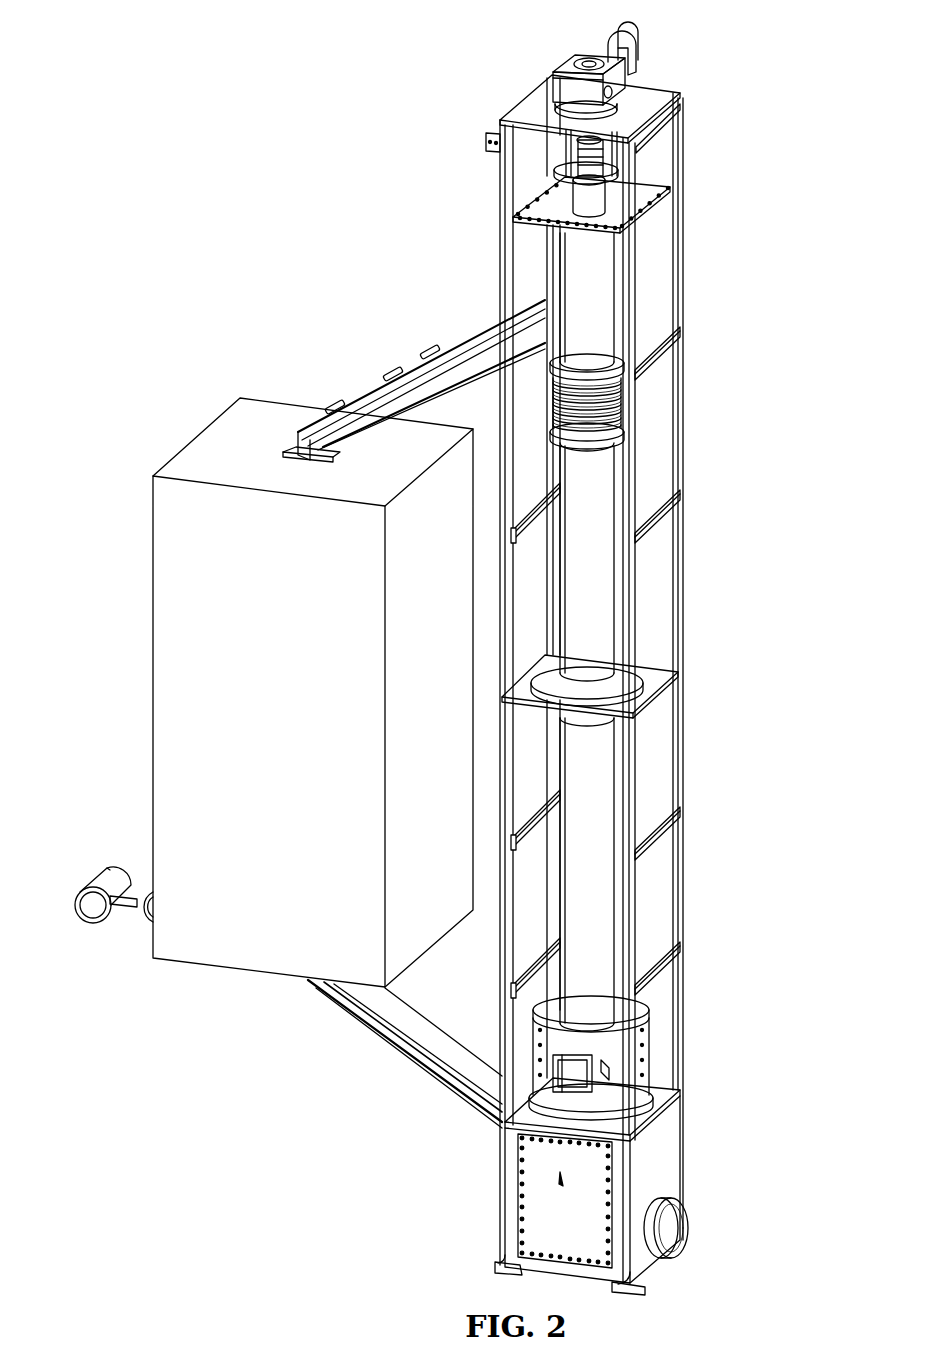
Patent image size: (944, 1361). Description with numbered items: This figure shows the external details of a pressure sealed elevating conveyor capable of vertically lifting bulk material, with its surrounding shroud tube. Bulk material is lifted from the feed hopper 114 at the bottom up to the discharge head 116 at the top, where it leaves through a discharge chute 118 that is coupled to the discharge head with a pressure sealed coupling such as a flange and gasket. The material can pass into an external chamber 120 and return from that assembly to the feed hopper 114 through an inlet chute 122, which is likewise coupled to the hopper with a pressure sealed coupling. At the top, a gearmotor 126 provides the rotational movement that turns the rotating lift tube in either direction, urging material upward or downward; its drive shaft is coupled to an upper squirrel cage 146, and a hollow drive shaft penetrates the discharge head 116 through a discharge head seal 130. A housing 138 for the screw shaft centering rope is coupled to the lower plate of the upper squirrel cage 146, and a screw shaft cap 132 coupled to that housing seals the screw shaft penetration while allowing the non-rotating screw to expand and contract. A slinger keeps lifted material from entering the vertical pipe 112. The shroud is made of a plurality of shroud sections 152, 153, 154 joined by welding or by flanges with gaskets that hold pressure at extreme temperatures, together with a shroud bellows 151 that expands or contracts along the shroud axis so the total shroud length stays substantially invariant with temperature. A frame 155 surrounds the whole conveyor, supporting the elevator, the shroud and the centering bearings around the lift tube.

The vertical pipe 112 is at (593, 351).
The feed hopper 114 is at (655, 1160).
The discharge head 116 is at (560, 283).
The discharge chute 118 is at (417, 373).
The external chamber 120 is at (243, 637).
The inlet chute 122 is at (467, 1077).
The gearmotor 126 is at (612, 84).
The discharge head seal 130 is at (587, 195).
The screw shaft cap 132 is at (632, 137).
The housing for screw shaft centering rope 138 is at (613, 155).
The upper squirrel cage 146 is at (615, 165).
The shroud bellows 151 is at (605, 412).
The shroud section 152 is at (580, 1047).
The shroud section 153 is at (590, 944).
The shroud section 154 is at (590, 577).
The frame 155 is at (683, 737).